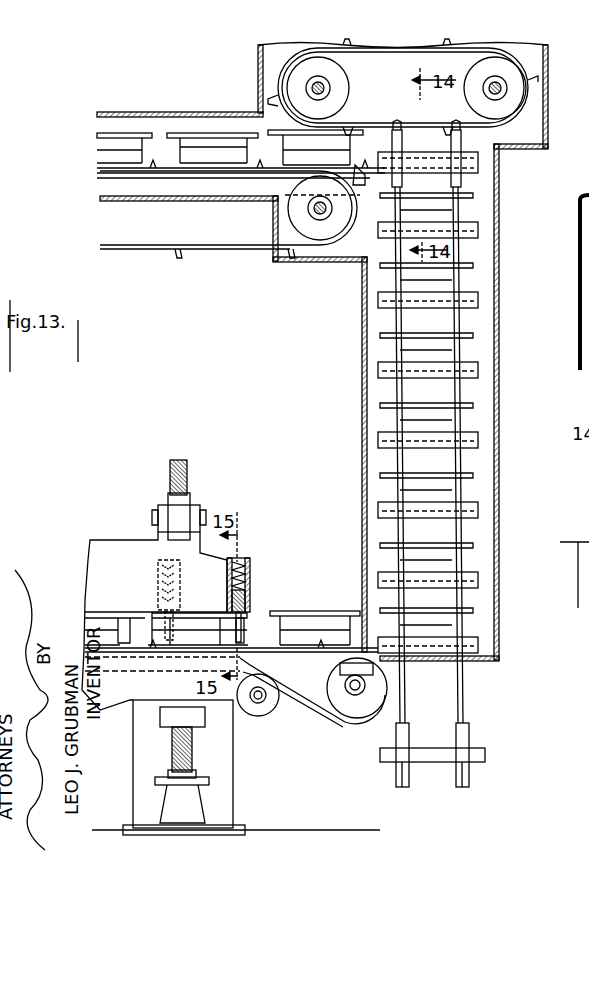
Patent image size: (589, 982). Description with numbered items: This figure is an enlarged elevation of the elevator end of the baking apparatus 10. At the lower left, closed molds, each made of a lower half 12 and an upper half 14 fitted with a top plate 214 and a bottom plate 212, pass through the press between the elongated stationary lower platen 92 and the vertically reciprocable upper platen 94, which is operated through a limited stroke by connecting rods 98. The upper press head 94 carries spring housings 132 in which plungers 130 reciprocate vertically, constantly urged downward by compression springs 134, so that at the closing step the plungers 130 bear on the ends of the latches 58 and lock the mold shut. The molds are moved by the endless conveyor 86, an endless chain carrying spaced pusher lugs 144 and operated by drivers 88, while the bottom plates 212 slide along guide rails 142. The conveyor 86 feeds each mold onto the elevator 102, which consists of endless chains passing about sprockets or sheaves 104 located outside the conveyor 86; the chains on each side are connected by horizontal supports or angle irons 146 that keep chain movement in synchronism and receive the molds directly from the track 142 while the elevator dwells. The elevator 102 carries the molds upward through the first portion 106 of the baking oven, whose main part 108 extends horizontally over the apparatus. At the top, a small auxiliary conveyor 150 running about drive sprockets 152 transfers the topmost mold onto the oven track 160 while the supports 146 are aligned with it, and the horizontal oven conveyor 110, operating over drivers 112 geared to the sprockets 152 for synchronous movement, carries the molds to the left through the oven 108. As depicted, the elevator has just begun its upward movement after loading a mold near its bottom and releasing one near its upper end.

The conveyor chain base 10 is at (462, 738).
The lower half of the mold 12 is at (203, 150).
The upper half of the mold 14 is at (122, 145).
The latches 58 is at (170, 631).
The endless conveyor 86 is at (327, 717).
The drivers 88 is at (357, 707).
The lower platen 92 is at (113, 698).
The upper platen 94 is at (107, 560).
The connecting rods 98 is at (182, 480).
The elevator 102 is at (463, 595).
The drivers 104 is at (460, 182).
The first portion of a baking oven 106 is at (498, 408).
The main part of the baking oven 108 is at (228, 112).
The horizontal conveyor 110 is at (215, 250).
The drivers 112 is at (318, 228).
The plungers 130 is at (250, 596).
The spring housings 132 is at (248, 568).
The compression springs 134 is at (250, 578).
The guide rails 142 is at (280, 712).
The pusher lugs 144 is at (261, 646).
The horizontal supports or angle irons 146 is at (477, 158).
The auxiliary conveyor 150 is at (528, 103).
The drive sprockets or sheaves 152 is at (337, 86).
The oven track 160 is at (240, 213).
The bottom plates 212 is at (148, 140).
The top plates 214 is at (177, 132).